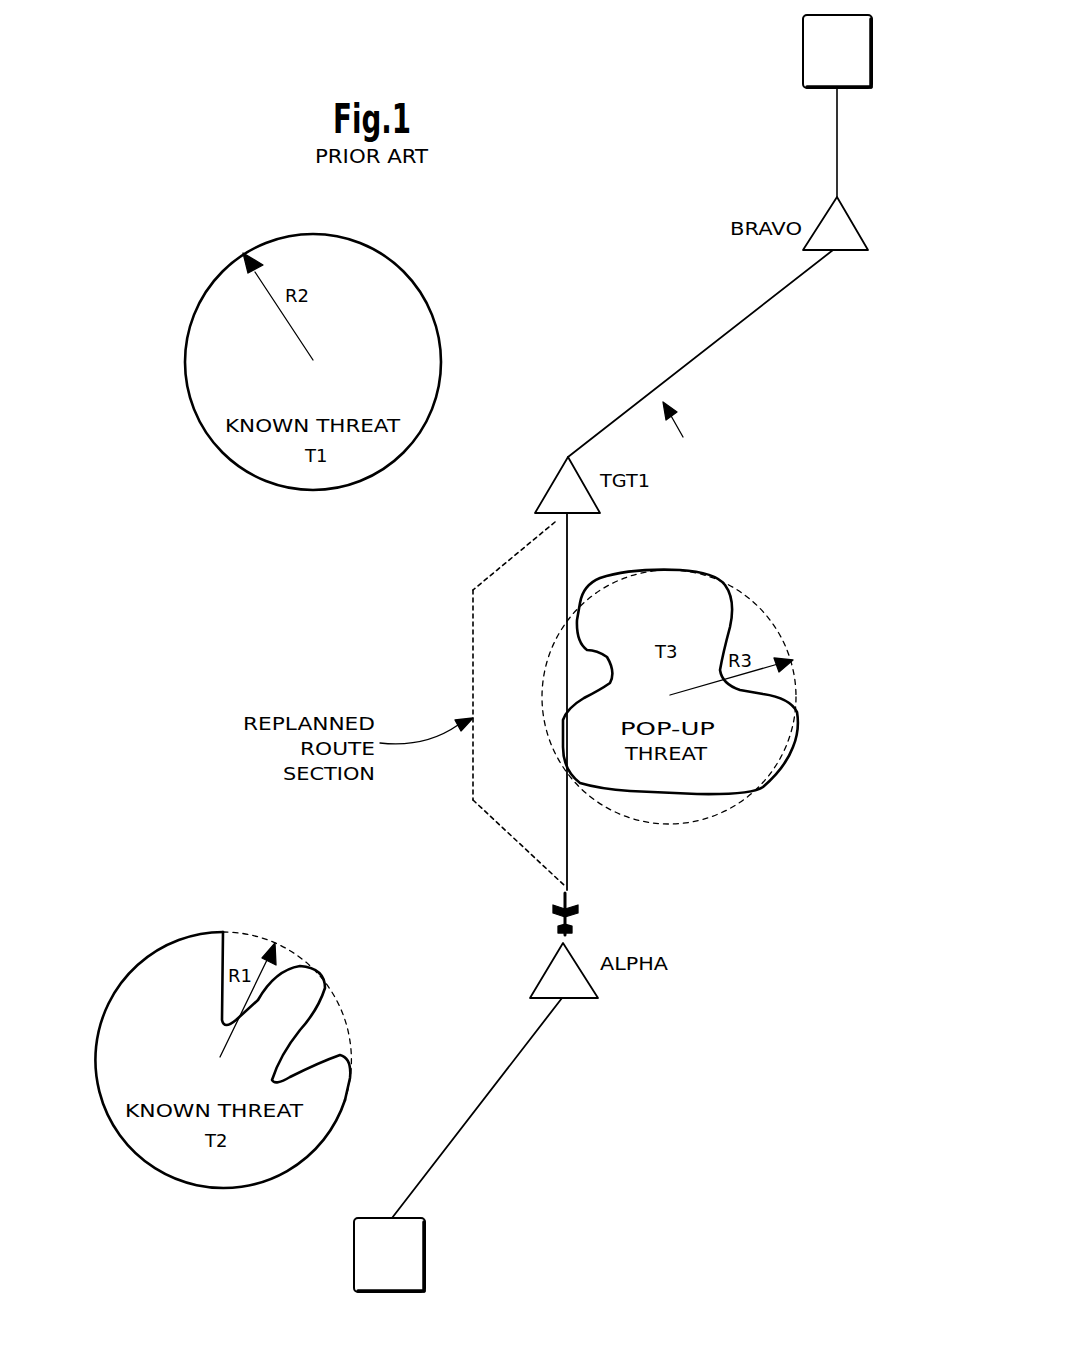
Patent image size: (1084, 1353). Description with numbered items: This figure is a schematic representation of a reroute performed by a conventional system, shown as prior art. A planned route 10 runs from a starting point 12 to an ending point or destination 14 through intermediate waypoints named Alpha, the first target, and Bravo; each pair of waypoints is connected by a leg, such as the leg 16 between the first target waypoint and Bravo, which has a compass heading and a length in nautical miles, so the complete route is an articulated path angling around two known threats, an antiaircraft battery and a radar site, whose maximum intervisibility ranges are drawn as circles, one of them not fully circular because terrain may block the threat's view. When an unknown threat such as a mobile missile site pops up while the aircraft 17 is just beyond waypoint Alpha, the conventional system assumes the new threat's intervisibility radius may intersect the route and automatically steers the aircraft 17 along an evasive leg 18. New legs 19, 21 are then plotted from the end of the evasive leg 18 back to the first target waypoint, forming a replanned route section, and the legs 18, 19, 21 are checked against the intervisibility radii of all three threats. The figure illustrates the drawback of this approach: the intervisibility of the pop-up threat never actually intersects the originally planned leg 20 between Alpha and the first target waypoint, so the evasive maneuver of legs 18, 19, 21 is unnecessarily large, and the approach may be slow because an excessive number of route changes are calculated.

The planned route 10 is at (687, 434).
The starting point 12 is at (372, 1262).
The destination 14 is at (843, 47).
The leg 16 is at (720, 340).
The aircraft 17 is at (578, 913).
The evasive leg 18 is at (507, 830).
The new leg 19 is at (470, 678).
The originally planned leg 20 is at (567, 842).
The new leg 21 is at (508, 560).